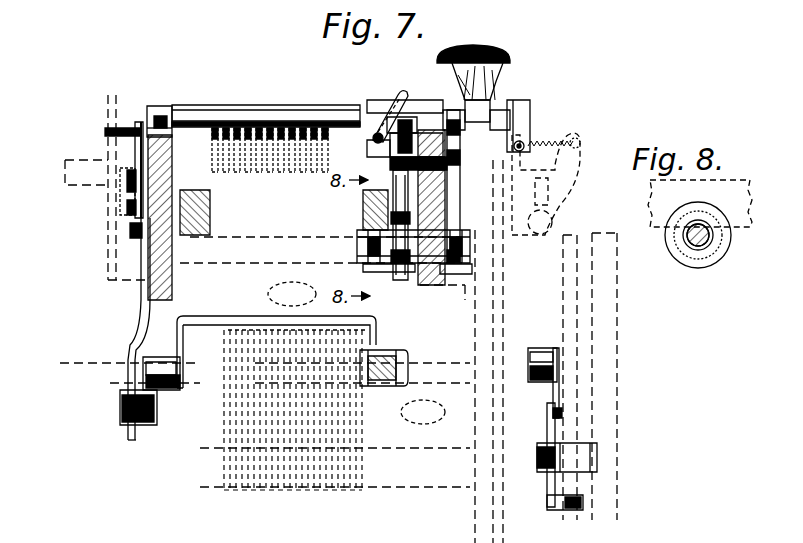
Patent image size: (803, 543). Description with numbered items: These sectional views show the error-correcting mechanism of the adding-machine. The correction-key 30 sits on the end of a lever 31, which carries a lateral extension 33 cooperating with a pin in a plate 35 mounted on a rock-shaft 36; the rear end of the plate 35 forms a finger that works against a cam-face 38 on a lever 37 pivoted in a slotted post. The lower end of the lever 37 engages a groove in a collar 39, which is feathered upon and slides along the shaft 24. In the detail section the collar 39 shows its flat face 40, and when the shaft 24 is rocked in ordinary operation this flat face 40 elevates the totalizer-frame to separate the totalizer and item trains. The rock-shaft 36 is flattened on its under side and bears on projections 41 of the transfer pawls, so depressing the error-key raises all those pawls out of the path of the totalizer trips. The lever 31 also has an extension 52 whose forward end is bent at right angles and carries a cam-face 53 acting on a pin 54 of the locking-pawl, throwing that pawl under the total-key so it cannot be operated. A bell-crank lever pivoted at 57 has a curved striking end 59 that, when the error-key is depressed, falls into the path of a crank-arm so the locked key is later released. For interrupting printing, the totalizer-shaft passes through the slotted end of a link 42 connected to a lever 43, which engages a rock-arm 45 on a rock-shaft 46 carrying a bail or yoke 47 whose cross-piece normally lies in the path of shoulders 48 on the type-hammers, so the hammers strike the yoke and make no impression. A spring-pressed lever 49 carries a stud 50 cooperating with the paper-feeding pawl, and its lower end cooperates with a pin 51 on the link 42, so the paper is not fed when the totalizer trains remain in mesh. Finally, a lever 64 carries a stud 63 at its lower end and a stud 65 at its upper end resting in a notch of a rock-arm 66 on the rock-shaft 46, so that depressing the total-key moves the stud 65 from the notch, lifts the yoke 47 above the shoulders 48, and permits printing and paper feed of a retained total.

In FIG. 7, the rock-shaft 24 is at (308, 262).
In FIG. 7, the correction-key 30 is at (470, 46).
In FIG. 7, the lever 31 is at (497, 108).
In FIG. 7, the lateral extension 33 is at (420, 112).
In FIG. 7, the plate 35 is at (385, 130).
In FIG. 7, the rock-shaft 36 is at (325, 106).
In FIG. 7, the lever 37 is at (380, 142).
In FIG. 7, the cam-face 38 is at (404, 96).
In FIG. 7, the collar 39 is at (400, 265).
In FIG. 8, the collar 39 is at (694, 266).
In FIG. 7, the flat face 40 is at (390, 240).
In FIG. 8, the flat face 40 is at (702, 222).
In FIG. 7, the projections 41 is at (298, 128).
In FIG. 7, the link 42 is at (136, 320).
In FIG. 7, the lever 43 is at (124, 404).
In FIG. 7, the rock-arm 45 is at (146, 368).
In FIG. 7, the rock-shaft 46 is at (440, 380).
In FIG. 7, the bail or yoke 47 is at (210, 318).
In FIG. 7, the shoulders 48 is at (262, 318).
In FIG. 7, the spring-pressed lever 49 is at (136, 160).
In FIG. 7, the stud 50 is at (105, 132).
In FIG. 7, the pin 51 is at (135, 232).
In FIG. 7, the extension 52 is at (520, 120).
In FIG. 7, the cam-face 53 is at (522, 144).
In FIG. 7, the pin 54 is at (540, 144).
In FIG. 7, the pivot 57 is at (462, 265).
In FIG. 7, the curved striking end 59 is at (455, 190).
In FIG. 7, the stud 63 is at (565, 510).
In FIG. 7, the lever 64 is at (550, 480).
In FIG. 7, the stud 65 is at (560, 420).
In FIG. 7, the rock-arm 66 is at (553, 385).